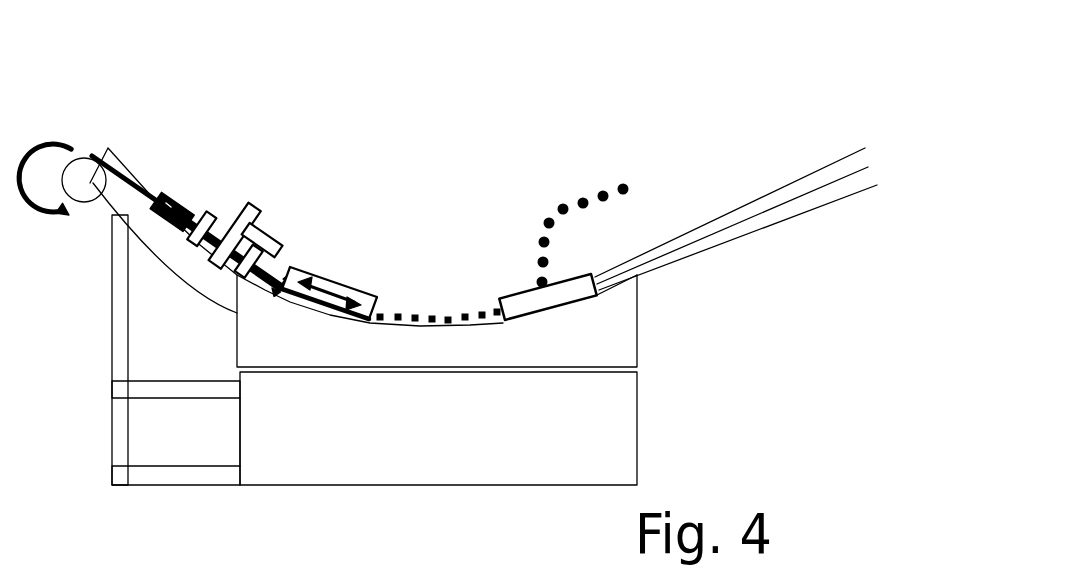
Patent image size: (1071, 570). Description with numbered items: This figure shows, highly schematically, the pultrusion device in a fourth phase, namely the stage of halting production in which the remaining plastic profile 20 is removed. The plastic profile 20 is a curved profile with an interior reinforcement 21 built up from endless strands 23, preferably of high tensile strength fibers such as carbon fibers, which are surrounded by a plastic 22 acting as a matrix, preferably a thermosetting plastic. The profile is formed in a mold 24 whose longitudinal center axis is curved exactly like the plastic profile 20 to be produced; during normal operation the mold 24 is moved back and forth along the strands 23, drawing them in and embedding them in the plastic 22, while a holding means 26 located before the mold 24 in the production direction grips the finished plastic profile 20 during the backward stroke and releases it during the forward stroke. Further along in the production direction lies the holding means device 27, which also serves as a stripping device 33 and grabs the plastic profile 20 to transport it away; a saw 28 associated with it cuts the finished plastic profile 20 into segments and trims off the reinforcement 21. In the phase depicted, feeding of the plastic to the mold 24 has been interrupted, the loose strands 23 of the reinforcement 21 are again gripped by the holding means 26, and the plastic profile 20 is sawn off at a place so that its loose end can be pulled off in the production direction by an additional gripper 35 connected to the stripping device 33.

The plastic profile 20 is at (283, 260).
The reinforcement 21 is at (470, 317).
The plastic 22 is at (606, 188).
The strands 23 is at (758, 250).
The mold 24 is at (583, 300).
The holding means 26 is at (362, 293).
The holding means device 27 is at (229, 189).
The saw 28 is at (272, 235).
The stripping device 33 is at (82, 170).
The additional gripper 35 is at (173, 197).